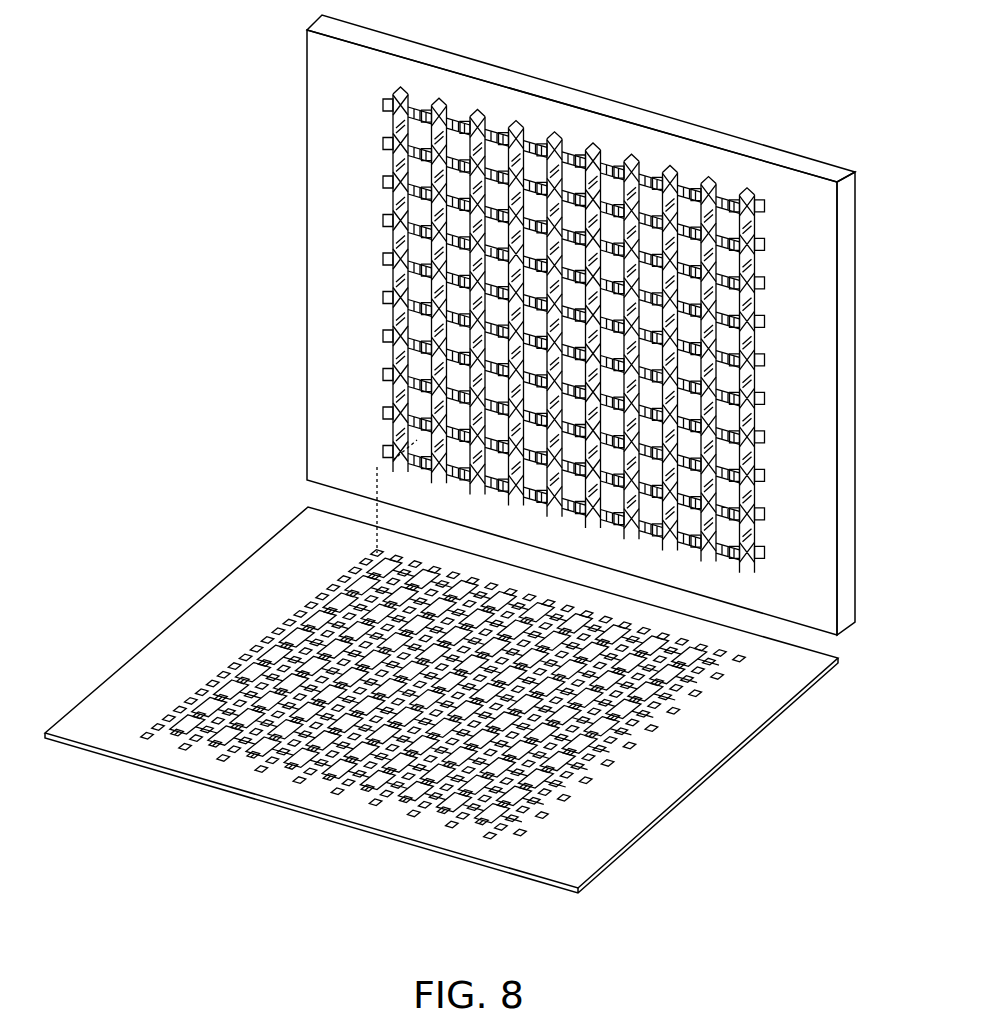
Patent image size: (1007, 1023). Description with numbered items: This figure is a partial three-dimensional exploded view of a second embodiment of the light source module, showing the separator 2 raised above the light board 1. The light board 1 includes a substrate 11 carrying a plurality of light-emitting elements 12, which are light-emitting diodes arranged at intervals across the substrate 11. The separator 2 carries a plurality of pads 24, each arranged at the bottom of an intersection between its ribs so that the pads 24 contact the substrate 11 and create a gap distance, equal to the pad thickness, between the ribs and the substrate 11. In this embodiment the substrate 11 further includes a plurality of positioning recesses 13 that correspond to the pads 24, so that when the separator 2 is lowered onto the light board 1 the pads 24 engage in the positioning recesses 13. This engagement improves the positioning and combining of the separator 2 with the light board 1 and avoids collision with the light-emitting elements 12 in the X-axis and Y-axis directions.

The light board 1 is at (477, 720).
The substrate 11 is at (632, 810).
The light-emitting element 12 is at (682, 688).
The positioning recess 13 is at (683, 665).
The separator 2 is at (503, 325).
The pad 24 is at (392, 424).